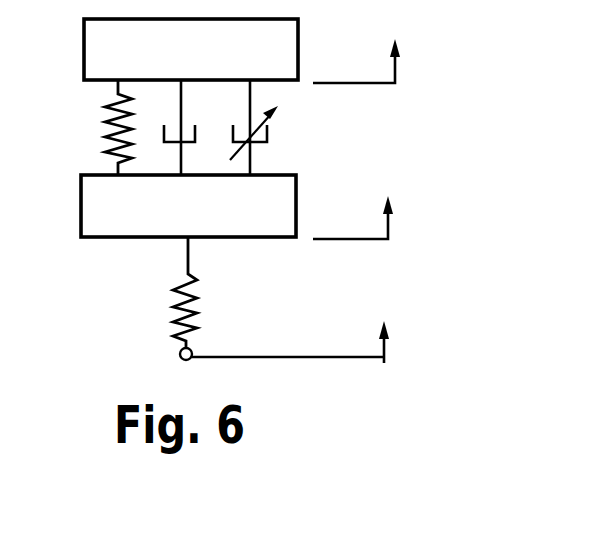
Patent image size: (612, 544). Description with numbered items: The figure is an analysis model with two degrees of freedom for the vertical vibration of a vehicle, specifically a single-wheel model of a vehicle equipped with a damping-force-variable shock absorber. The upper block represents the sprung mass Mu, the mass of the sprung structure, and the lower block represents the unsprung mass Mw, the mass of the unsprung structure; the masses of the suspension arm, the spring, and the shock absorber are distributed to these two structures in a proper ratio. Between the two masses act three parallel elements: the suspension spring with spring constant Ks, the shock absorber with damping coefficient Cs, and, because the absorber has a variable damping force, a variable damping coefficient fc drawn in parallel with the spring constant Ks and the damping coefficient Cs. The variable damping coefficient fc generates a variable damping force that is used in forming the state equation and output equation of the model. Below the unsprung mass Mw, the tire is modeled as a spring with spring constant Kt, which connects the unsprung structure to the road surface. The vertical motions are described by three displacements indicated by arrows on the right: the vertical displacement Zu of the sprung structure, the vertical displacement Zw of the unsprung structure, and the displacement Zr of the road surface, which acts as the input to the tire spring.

The sprung mass Mu is at (191, 49).
The unsprung mass Mw is at (188, 206).
The spring constant of the spring Ks is at (96, 128).
The damping coefficient of the shock absorber Cs is at (196, 128).
The variable damping coefficient fc is at (269, 128).
The spring constant of a tire Kt is at (163, 298).
The vertical displacement of a sprung structure Zu is at (378, 60).
The vertical displacement of an unsprung structure Zw is at (378, 216).
The displacement of the surface of a road Zr is at (403, 340).